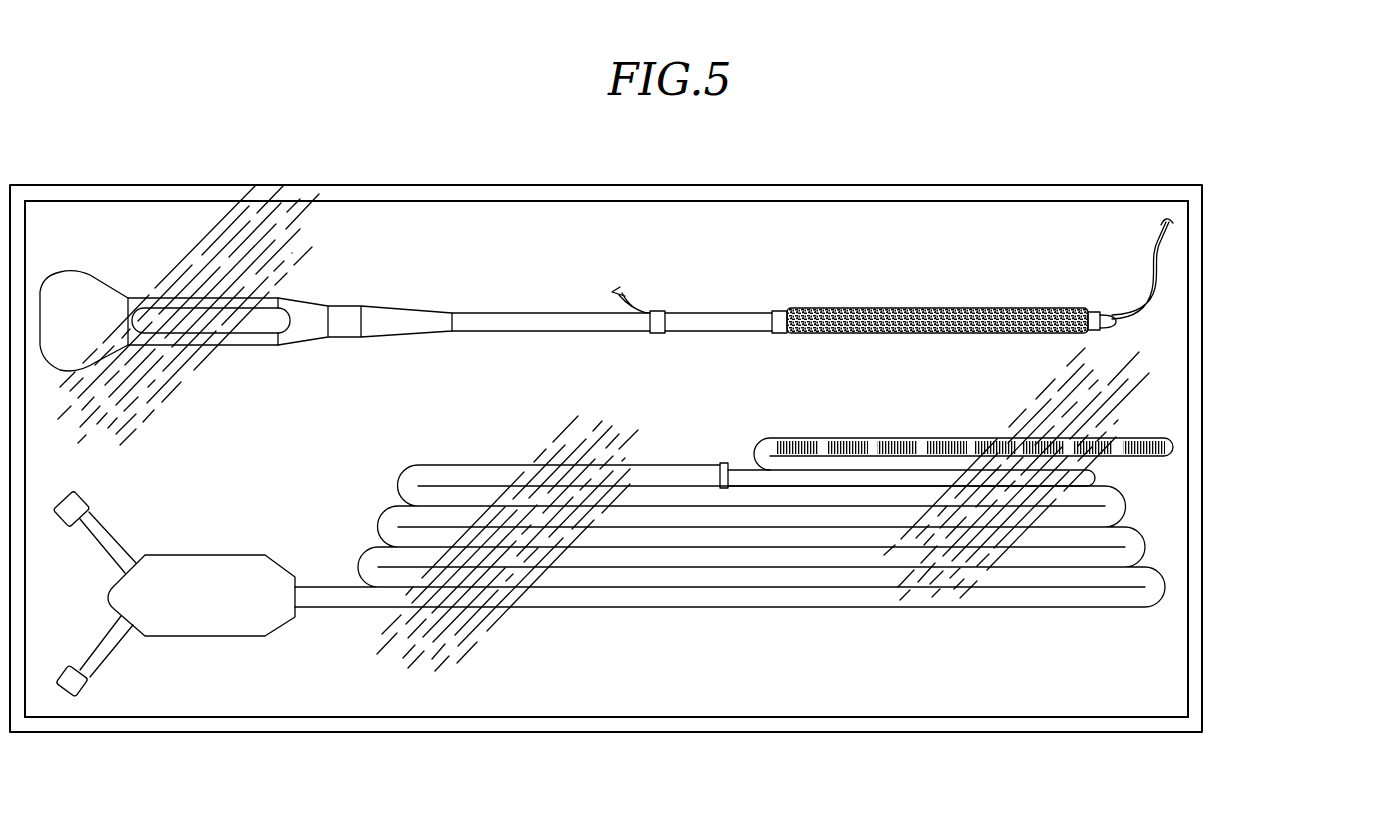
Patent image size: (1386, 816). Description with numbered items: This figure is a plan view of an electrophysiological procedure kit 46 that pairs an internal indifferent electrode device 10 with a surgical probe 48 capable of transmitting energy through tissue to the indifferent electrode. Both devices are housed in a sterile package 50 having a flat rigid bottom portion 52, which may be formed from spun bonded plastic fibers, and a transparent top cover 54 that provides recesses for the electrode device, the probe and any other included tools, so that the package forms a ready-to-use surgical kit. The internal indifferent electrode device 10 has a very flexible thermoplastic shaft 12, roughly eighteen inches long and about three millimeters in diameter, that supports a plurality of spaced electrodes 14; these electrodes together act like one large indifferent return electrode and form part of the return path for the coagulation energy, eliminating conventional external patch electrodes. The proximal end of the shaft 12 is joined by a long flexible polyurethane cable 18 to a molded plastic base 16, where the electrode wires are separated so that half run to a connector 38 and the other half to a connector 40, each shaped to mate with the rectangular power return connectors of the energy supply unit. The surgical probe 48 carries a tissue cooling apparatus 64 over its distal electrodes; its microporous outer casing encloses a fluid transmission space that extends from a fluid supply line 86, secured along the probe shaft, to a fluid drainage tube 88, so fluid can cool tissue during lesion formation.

The internal indifferent electrode device 10 is at (613, 551).
The shaft 12 is at (772, 438).
The electrodes 14 is at (852, 438).
The base 16 is at (218, 627).
The cable 18 is at (613, 597).
The connector 38 is at (86, 496).
The connector 40 is at (93, 693).
The electrophysiological procedure kit 46 is at (1258, 488).
The surgical probe 48 is at (606, 300).
The sterile package 50 is at (1216, 562).
The bottom portion 52 is at (231, 347).
The top cover 54 is at (1138, 682).
The tissue cooling apparatus 64 is at (975, 335).
The fluid supply line 86 is at (632, 303).
The fluid drainage tube 88 is at (1157, 252).